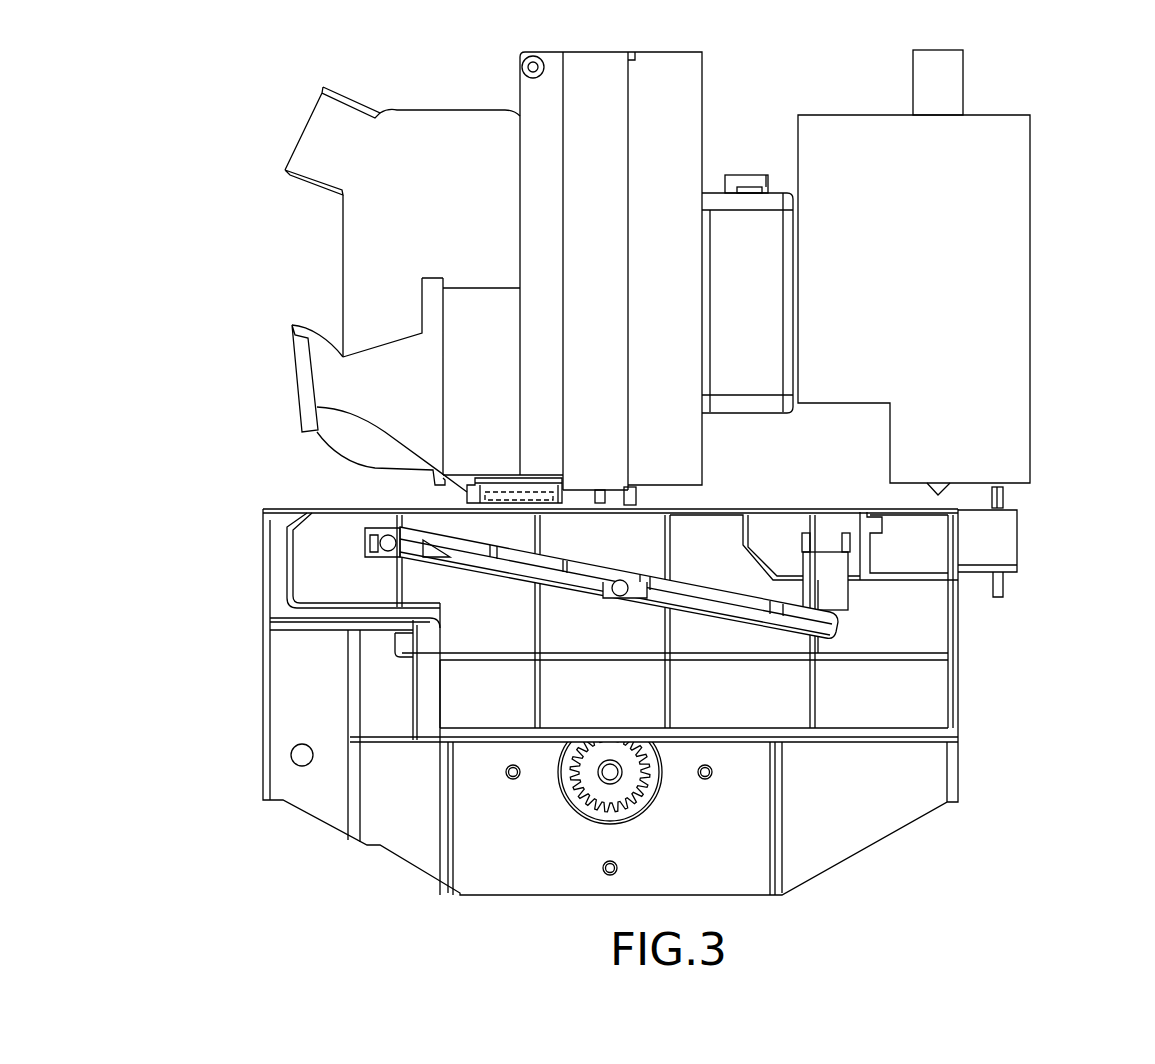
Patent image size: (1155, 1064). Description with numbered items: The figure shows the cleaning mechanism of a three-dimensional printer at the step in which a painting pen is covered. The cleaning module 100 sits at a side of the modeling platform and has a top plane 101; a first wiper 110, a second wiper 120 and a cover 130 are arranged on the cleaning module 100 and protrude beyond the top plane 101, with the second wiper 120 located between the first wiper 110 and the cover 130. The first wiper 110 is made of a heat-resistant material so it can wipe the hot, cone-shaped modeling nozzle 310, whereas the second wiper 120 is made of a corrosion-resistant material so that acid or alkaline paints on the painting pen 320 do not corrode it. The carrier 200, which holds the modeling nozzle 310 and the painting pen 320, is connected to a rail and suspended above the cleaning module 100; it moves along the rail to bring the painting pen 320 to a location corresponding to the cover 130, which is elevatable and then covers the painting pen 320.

The cleaning module 100 is at (249, 713).
The top plane 101 is at (330, 508).
The first wiper 110 is at (1000, 490).
The second wiper 120 is at (637, 497).
The cover 130 is at (317, 410).
The carrier 200 is at (713, 99).
The modeling nozzle 310 is at (940, 492).
The painting pen 320 is at (500, 500).